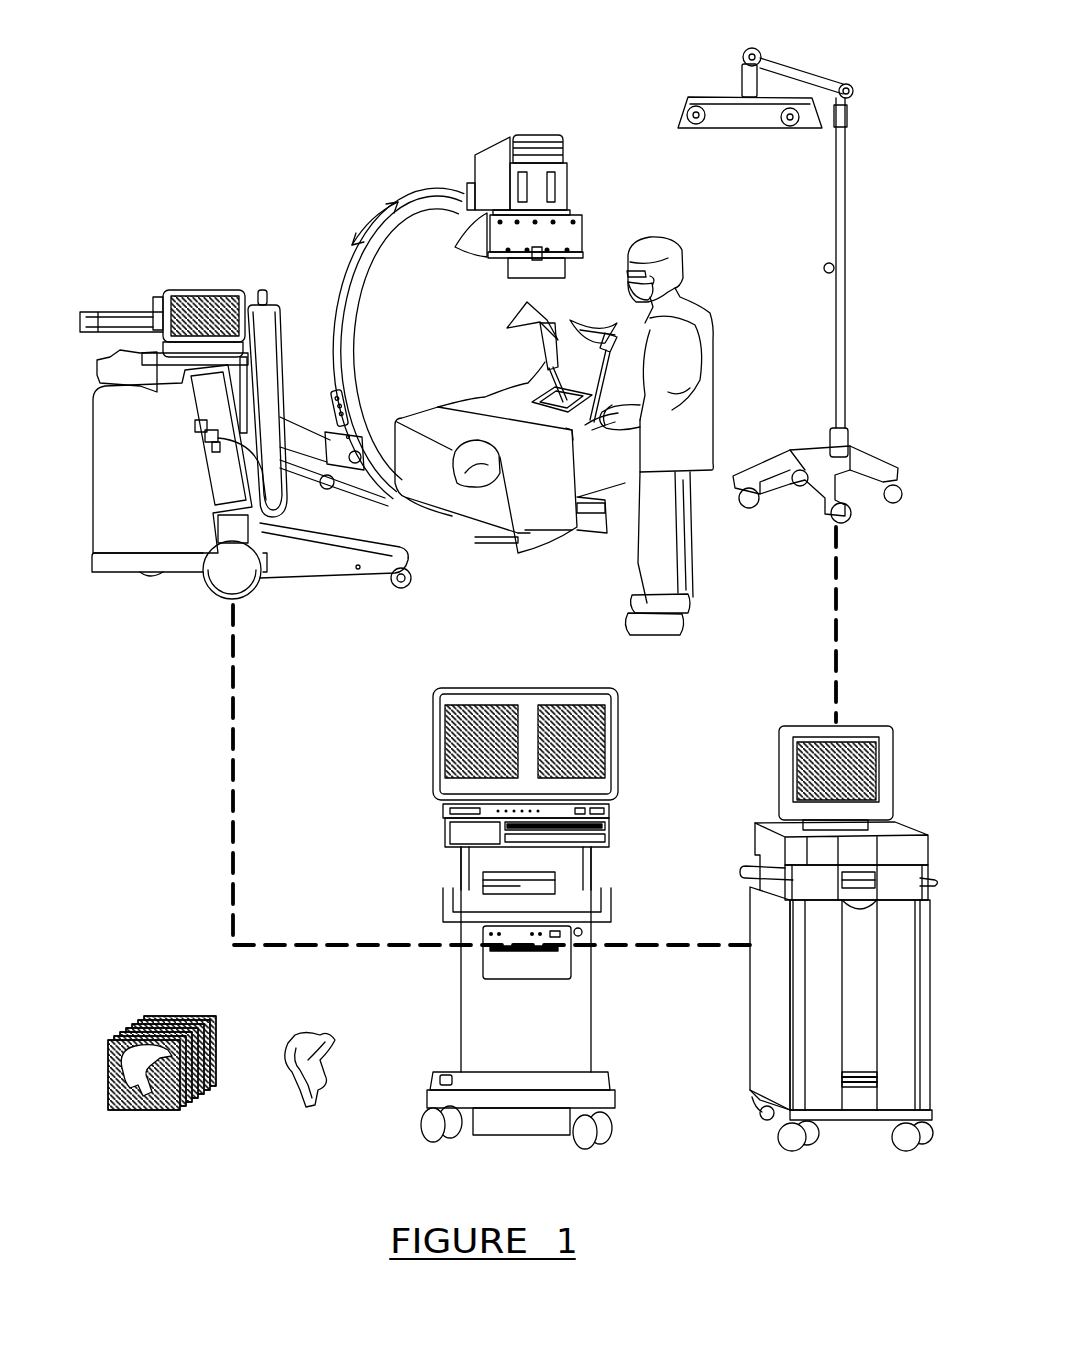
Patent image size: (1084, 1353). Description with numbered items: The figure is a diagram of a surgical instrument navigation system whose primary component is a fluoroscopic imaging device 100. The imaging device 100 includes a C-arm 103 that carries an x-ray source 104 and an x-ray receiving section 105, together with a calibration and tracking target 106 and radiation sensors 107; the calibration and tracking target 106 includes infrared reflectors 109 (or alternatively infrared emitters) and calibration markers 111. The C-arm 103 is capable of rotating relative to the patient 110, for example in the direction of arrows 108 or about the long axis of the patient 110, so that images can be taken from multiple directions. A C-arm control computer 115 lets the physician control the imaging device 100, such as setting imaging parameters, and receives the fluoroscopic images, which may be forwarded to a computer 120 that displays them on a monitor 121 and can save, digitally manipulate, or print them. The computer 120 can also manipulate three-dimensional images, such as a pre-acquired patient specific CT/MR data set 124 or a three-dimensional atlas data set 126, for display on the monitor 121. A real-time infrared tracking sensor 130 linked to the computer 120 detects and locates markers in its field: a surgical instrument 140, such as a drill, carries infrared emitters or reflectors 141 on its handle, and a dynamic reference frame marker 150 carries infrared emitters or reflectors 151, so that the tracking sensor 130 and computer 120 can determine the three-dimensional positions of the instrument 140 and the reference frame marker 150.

The fluoroscopic imaging device 100 is at (333, 126).
The C-arm 103 is at (340, 297).
The x-ray source 104 is at (598, 532).
The x-ray receiving section 105 is at (568, 188).
The calibration and tracking target 106 is at (584, 235).
The radiation sensors 107 is at (505, 258).
The arrows 108 is at (369, 223).
The infrared reflectors 109 is at (452, 238).
The patient 110 is at (468, 470).
The calibration markers 111 is at (517, 278).
The C-arm control computer 115 is at (461, 873).
The computer 120 is at (752, 964).
The monitor 121 is at (778, 765).
The pre-acquired patient specific CT/MR data set 124 is at (167, 1112).
The three-dimensional atlas data set 126 is at (310, 1107).
The tracking sensor 130 is at (684, 101).
The surgical instrument 140 is at (570, 433).
The infrared emitters or reflectors 141 is at (590, 343).
The reference frame marker 150 is at (508, 383).
The infrared emitters or reflectors 151 is at (527, 332).